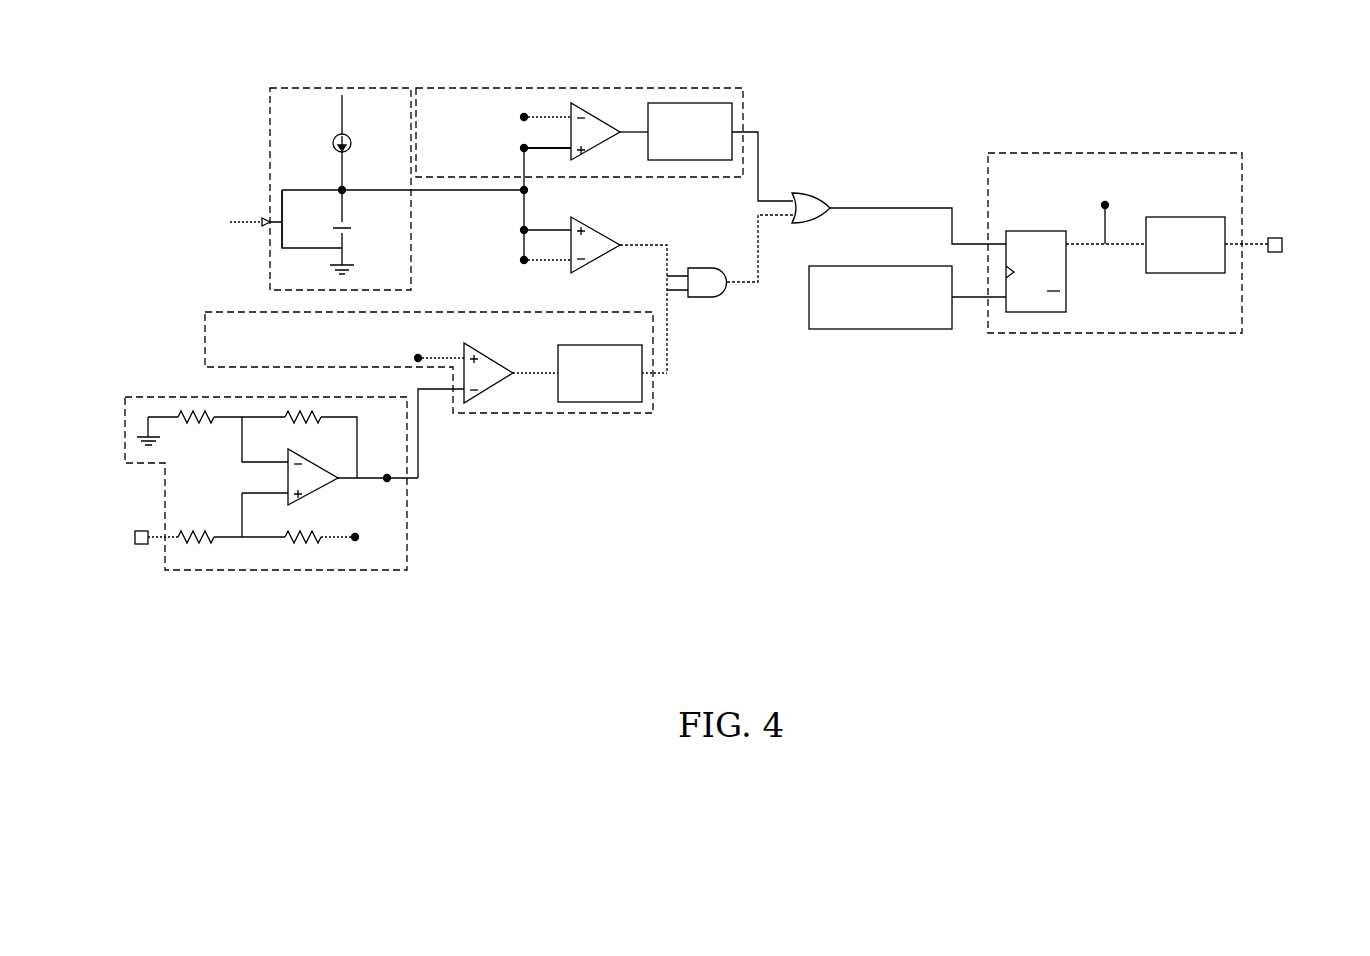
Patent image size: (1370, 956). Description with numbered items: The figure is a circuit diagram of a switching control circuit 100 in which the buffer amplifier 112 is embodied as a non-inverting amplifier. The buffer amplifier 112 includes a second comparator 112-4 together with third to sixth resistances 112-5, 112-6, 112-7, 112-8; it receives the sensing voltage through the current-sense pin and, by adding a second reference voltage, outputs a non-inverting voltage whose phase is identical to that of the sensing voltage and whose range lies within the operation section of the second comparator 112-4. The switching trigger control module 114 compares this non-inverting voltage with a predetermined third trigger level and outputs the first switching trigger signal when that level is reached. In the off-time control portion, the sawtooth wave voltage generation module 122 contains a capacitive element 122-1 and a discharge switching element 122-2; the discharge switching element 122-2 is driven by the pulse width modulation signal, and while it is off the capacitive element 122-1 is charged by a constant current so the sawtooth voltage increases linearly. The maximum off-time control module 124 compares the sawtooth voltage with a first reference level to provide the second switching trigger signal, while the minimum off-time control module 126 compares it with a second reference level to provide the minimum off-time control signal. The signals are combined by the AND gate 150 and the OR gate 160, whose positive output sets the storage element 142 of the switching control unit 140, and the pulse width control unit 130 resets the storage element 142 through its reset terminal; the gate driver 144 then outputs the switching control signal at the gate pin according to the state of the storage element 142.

The switching control circuit 100 is at (904, 87).
The buffer amplifier 112 is at (165, 479).
The second comparator 112-4 is at (322, 496).
The third resistance 112-5 is at (200, 540).
The fourth resistance 112-6 is at (305, 540).
The fifth resistance 112-7 is at (192, 417).
The sixth resistance 112-8 is at (298, 417).
The switching trigger control module 114 is at (655, 399).
The sawtooth wave voltage generation module 122 is at (268, 120).
The capacitive element 122-1 is at (349, 229).
The discharge switching element 122-2 is at (280, 221).
The maximum off-time control module 124 is at (640, 88).
The minimum off-time control module 126 is at (600, 228).
The pulse width control unit 130 is at (885, 329).
The switching control unit 140 is at (1115, 333).
The storage element 142 is at (1033, 231).
The gate driver 144 is at (1182, 217).
The AND gate 150 is at (708, 297).
The OR gate 160 is at (798, 193).